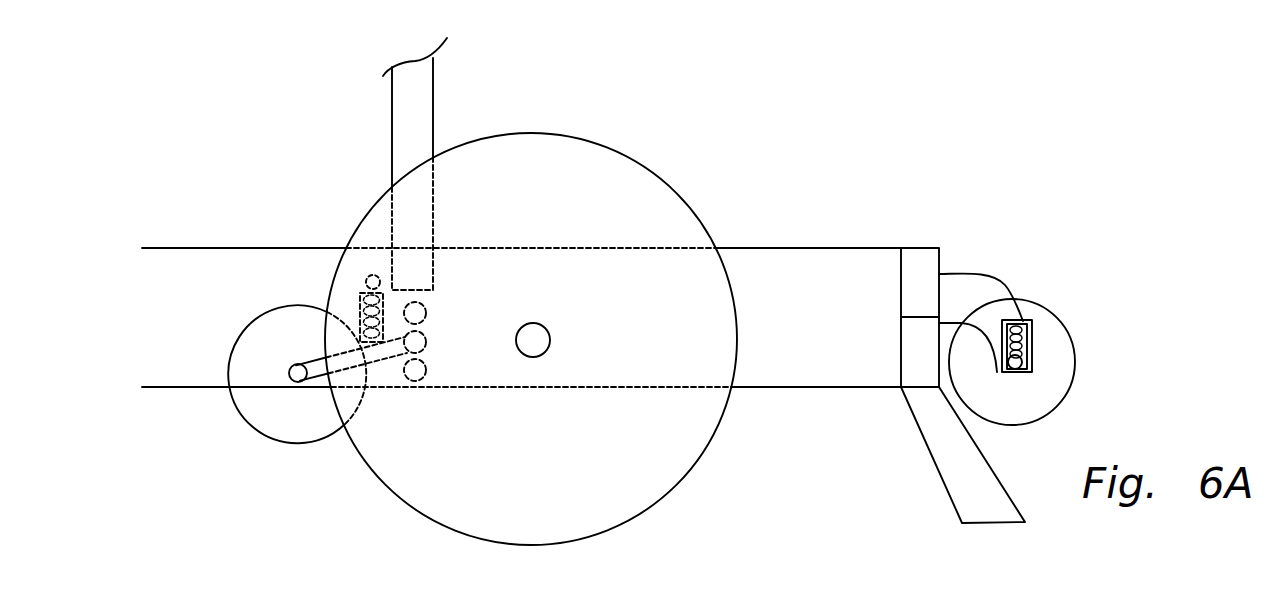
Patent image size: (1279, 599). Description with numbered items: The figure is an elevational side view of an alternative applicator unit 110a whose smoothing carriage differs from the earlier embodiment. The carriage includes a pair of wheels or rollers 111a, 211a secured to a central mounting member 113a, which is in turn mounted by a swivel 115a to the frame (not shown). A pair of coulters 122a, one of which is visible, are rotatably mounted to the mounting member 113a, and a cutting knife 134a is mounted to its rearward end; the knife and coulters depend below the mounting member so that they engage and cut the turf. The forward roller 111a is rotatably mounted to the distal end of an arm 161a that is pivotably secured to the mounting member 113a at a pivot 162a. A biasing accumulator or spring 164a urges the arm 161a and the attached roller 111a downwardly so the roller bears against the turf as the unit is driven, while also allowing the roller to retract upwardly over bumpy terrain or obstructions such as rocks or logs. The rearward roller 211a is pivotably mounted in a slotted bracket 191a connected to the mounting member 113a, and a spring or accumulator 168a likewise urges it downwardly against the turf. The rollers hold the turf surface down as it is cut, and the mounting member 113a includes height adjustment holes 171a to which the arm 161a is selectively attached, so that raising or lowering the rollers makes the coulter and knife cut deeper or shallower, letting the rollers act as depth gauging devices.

The applicator unit 110a is at (232, 163).
The roller 111a is at (257, 428).
The mounting member 113a is at (795, 248).
The swivel 115a is at (390, 112).
The coulter 122a is at (535, 133).
The cutting knife 134a is at (943, 480).
The arm 161a is at (310, 360).
The pivot 162a is at (413, 345).
The spring 164a is at (362, 293).
The spring 168a is at (1030, 322).
The height adjustment holes 171a is at (427, 368).
The slotted bracket 191a is at (973, 275).
The roller 211a is at (1076, 362).